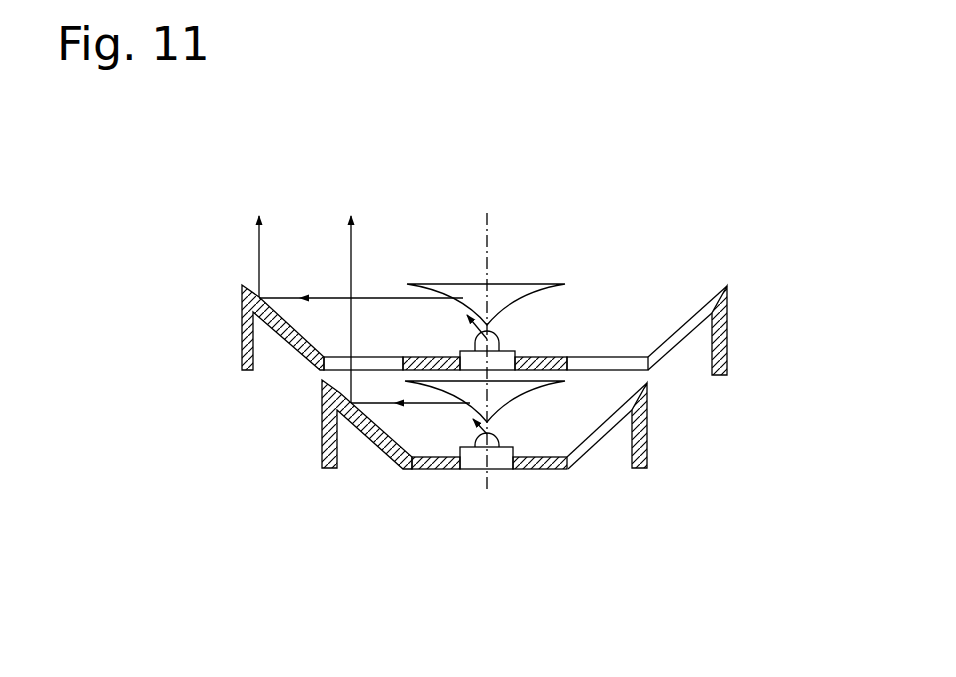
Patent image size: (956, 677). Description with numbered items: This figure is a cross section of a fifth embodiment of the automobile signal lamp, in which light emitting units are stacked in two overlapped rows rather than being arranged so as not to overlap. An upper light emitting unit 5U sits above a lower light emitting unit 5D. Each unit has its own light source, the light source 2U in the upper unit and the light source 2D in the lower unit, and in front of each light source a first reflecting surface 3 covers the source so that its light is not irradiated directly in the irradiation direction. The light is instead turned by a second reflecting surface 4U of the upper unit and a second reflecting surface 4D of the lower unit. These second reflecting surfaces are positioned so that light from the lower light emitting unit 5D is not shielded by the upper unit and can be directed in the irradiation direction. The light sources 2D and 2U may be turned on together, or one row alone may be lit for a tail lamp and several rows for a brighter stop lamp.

The first reflecting surface 3 is at (511, 297).
The light source of upper light emitting unit 2U is at (502, 343).
The light source of lower light emitting unit 2D is at (497, 444).
The second reflecting surface of upper light emitting unit 4U is at (688, 317).
The second reflecting surface of lower light emitting unit 4D is at (597, 424).
The upper light emitting unit 5U is at (750, 316).
The lower light emitting unit 5D is at (687, 449).